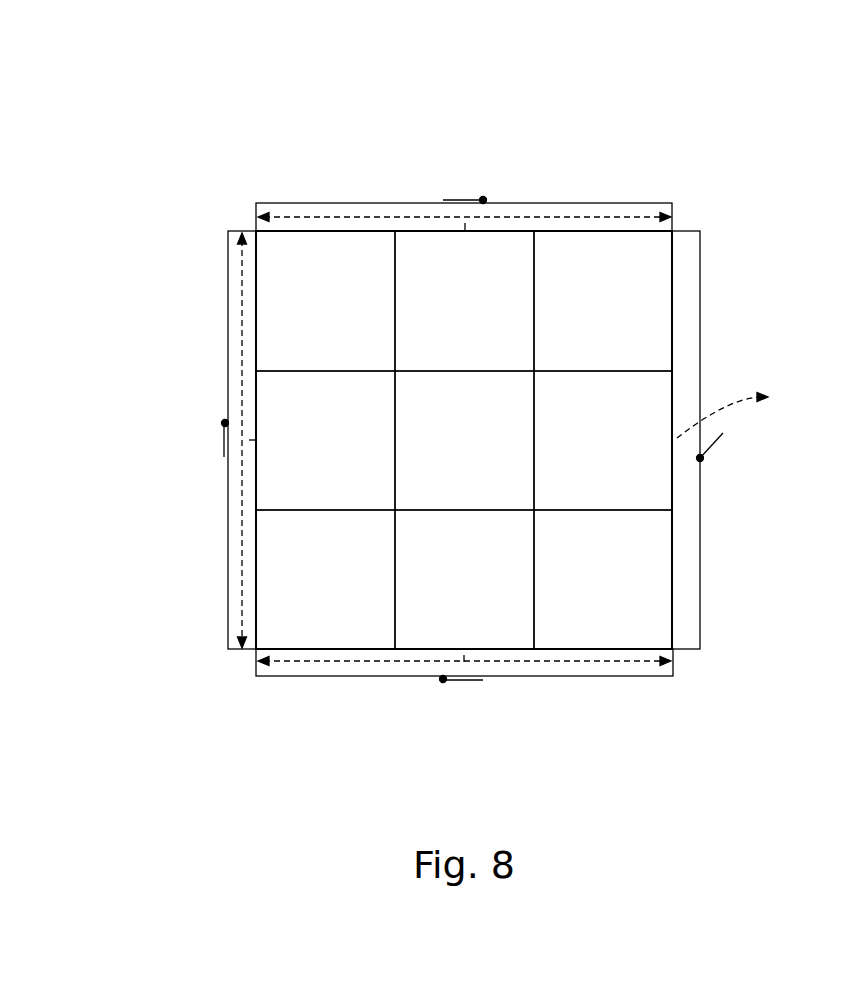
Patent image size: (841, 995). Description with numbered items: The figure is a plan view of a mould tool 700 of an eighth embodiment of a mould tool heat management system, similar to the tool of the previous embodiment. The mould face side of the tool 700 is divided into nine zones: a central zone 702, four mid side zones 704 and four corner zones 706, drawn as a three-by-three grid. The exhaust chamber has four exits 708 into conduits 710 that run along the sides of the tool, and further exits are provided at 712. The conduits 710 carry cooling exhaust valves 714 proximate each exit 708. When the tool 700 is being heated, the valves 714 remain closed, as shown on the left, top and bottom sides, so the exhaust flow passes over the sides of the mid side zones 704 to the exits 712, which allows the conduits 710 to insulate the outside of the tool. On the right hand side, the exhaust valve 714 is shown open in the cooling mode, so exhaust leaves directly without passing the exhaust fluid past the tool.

The tool 700 is at (220, 202).
The central zone 702 is at (443, 456).
The mid side zones 704 is at (443, 323).
The corner zones 706 is at (304, 323).
The exits 708 is at (485, 217).
The conduits 710 is at (320, 677).
The exits 712 is at (714, 232).
The cooling exhaust valves 714 is at (712, 446).